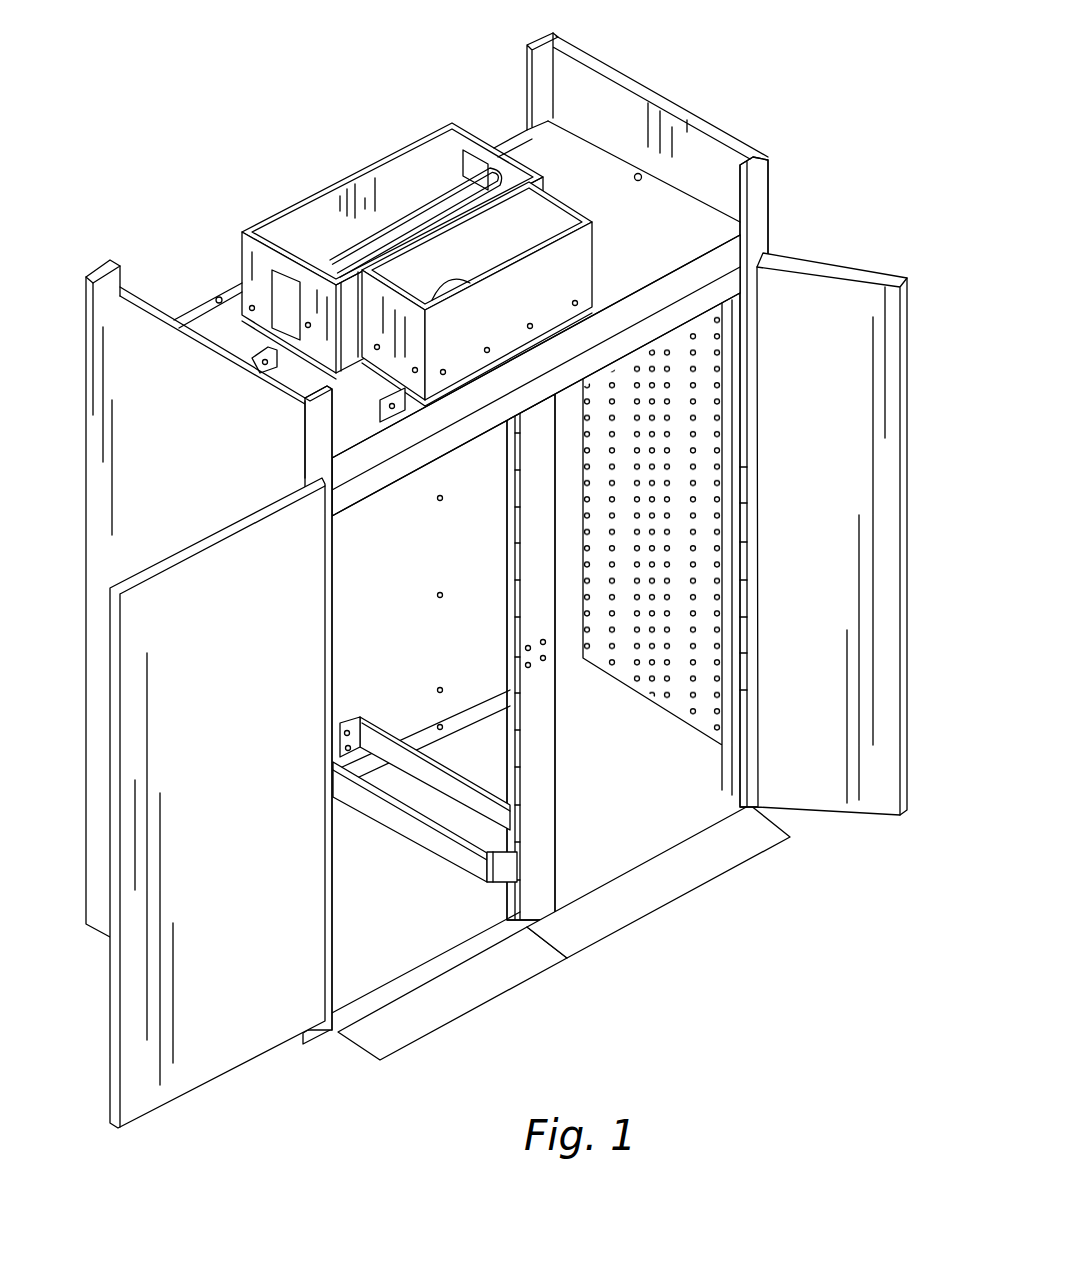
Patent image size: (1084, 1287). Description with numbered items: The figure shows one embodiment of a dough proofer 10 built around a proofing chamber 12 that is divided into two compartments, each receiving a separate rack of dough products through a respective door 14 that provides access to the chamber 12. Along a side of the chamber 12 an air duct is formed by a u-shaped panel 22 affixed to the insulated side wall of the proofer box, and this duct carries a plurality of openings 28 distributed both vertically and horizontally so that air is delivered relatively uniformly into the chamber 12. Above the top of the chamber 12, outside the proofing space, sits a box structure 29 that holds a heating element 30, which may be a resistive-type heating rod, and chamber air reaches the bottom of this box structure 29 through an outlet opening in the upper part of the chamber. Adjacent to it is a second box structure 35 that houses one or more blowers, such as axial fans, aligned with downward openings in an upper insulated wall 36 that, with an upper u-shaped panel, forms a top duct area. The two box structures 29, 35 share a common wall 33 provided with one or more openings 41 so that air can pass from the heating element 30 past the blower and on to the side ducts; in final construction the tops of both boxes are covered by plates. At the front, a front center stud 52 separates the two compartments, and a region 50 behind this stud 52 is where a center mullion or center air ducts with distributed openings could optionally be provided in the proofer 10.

The proofer 10 is at (277, 148).
The proofing chamber 12 is at (622, 757).
The door 14 is at (170, 560).
The u-shaped panel 22 is at (710, 368).
The openings 28 is at (693, 413).
The box structure 29 is at (445, 199).
The heating element 30 is at (505, 220).
The common wall 33 is at (512, 225).
The box structure 35 is at (593, 268).
The upper insulated wall 36 is at (698, 225).
The openings 41 is at (540, 228).
The region 50 is at (443, 812).
The front center stud 52 is at (528, 905).